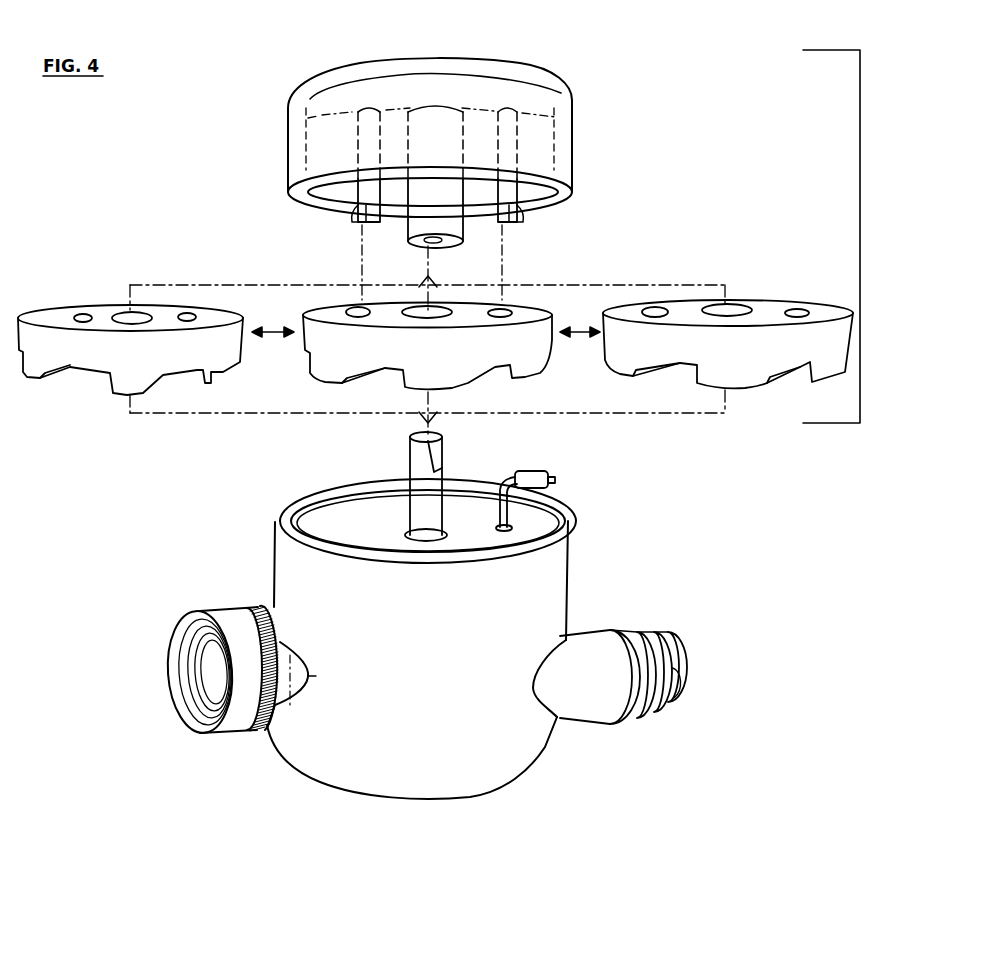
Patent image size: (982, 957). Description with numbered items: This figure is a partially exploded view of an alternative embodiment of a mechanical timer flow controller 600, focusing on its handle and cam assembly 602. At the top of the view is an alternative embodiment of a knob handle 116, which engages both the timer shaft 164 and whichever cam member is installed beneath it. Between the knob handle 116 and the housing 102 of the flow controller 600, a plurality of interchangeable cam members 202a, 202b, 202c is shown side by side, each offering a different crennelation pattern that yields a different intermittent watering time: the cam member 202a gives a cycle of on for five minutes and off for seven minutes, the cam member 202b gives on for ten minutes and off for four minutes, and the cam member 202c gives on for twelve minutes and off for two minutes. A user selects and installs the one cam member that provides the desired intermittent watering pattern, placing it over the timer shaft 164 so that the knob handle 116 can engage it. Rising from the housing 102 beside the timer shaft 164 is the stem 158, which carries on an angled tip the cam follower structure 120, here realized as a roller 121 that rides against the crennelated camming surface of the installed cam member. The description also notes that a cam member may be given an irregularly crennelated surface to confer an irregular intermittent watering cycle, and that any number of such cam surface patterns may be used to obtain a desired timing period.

The knob handle 116 is at (572, 112).
The flow controller 600 is at (200, 211).
The handle and cam assembly 602 is at (459, 242).
The cam member 202a is at (145, 364).
The cam member 202b is at (473, 368).
The cam member 202c is at (768, 368).
The timer shaft 164 is at (410, 447).
The roller 121 is at (547, 471).
The cam follower structure 120 is at (562, 479).
The stem 158 is at (560, 518).
The housing 102 is at (523, 757).